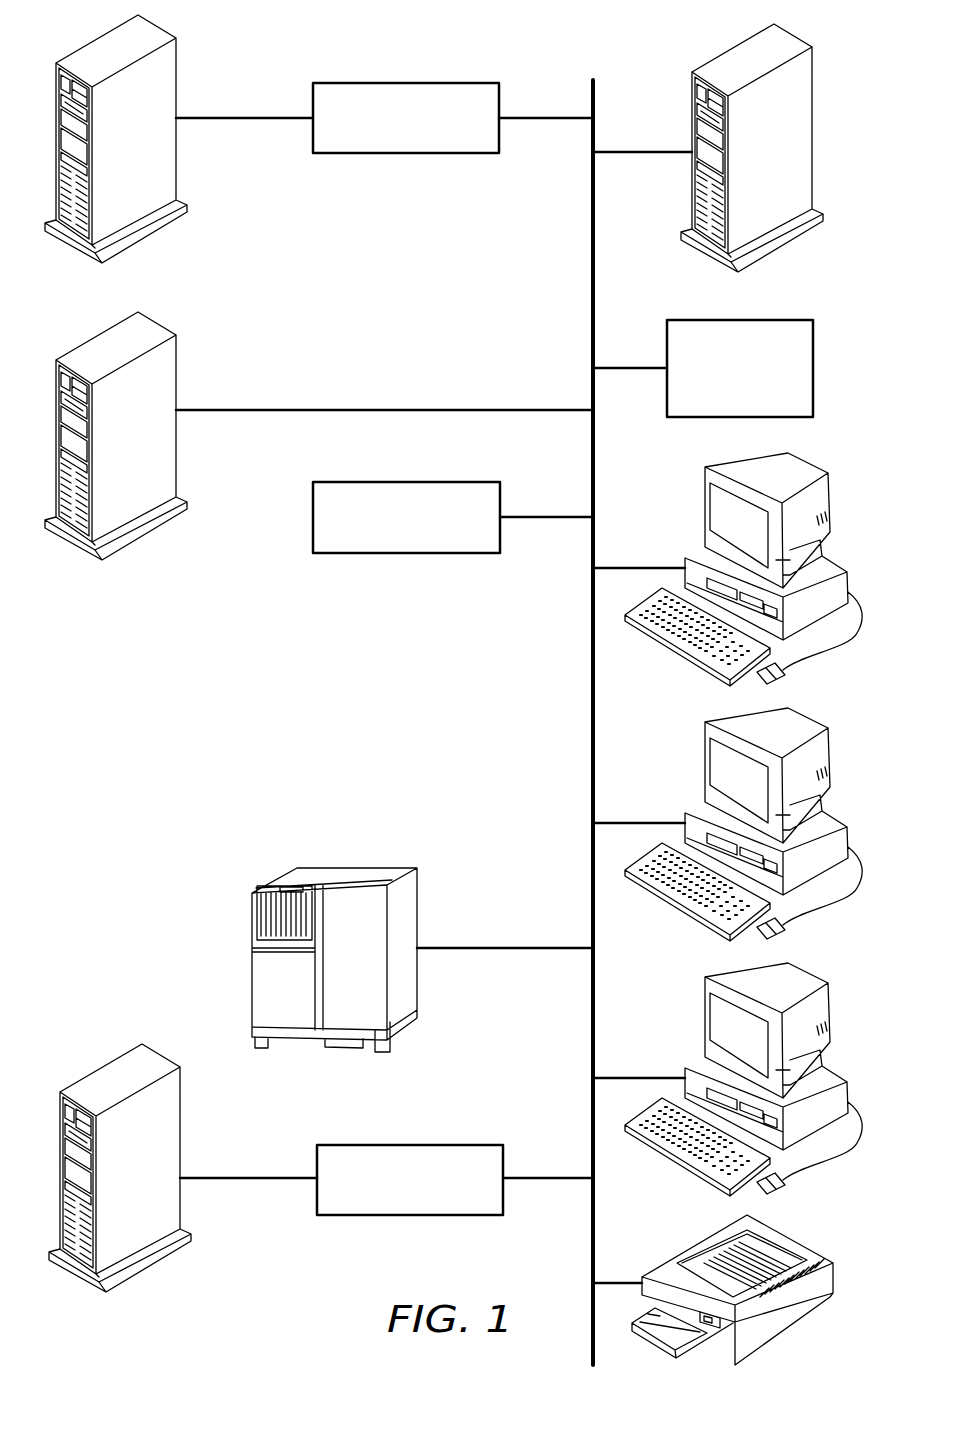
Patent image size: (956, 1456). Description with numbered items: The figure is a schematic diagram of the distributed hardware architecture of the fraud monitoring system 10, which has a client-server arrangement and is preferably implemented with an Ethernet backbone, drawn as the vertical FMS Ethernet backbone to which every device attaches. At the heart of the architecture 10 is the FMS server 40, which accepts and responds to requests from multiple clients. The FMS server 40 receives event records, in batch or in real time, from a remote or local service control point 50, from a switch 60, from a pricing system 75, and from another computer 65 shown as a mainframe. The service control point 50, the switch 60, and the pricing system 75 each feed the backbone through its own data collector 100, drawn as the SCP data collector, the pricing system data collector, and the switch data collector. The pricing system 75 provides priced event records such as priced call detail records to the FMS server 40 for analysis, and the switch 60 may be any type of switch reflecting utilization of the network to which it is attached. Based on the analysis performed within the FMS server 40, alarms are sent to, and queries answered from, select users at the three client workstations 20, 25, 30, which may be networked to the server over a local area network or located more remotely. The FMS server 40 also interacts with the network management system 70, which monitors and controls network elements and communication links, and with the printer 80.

The fraud monitoring system 10 is at (232, 709).
The client workstation 20 is at (703, 494).
The client workstation 25 is at (703, 749).
The client workstation 30 is at (703, 1004).
The FMS server 40 is at (723, 65).
The service control point 50 is at (90, 58).
The switch 60 is at (92, 1083).
The computer 65 is at (252, 992).
The Network Management System 70 is at (792, 320).
The pricing system 75 is at (90, 352).
The printer 80 is at (697, 1243).
The data collector 100 is at (342, 83).